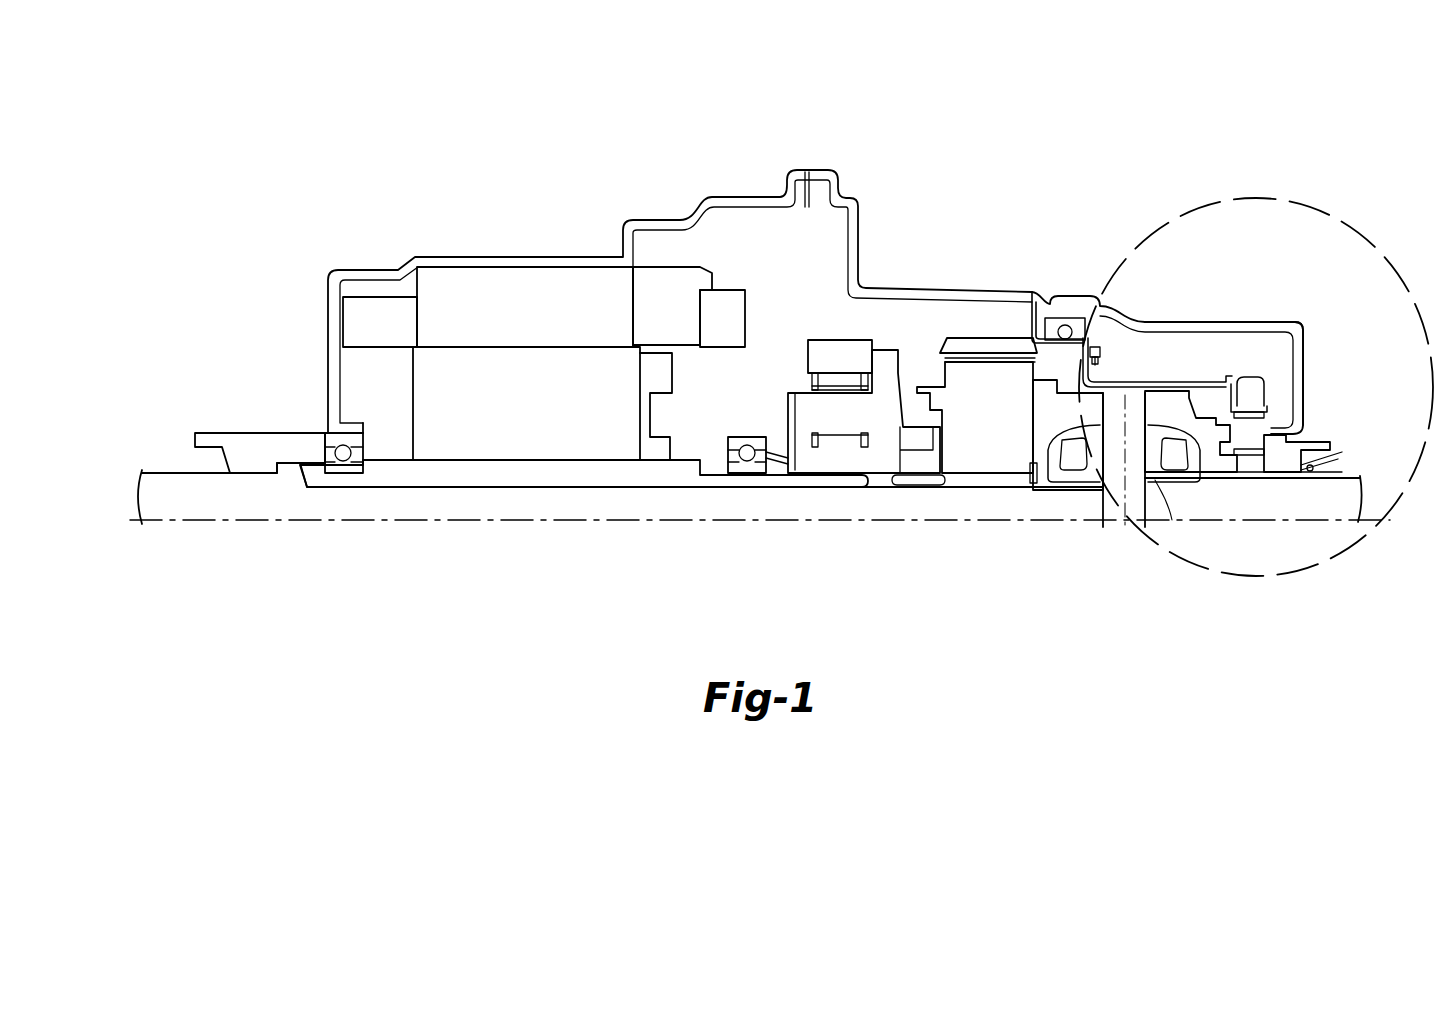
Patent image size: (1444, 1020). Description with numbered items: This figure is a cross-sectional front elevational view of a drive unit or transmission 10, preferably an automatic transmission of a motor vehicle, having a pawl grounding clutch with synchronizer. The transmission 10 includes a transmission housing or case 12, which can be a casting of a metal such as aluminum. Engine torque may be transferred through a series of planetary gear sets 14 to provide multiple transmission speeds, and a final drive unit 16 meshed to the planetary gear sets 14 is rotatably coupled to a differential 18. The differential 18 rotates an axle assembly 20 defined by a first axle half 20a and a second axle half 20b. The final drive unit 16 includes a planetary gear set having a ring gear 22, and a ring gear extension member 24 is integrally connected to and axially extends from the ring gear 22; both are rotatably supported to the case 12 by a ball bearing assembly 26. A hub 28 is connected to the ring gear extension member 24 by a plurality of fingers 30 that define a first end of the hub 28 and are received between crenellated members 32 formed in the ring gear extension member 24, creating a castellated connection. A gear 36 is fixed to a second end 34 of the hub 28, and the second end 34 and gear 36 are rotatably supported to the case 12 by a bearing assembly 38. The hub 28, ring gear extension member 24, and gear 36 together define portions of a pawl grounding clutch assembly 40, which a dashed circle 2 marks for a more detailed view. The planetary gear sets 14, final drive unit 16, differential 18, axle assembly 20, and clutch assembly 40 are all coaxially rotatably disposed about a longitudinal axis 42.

The detail view reference (FIG. 2) 2 is at (1268, 200).
The transmission 10 is at (1093, 117).
The transmission case 12 is at (898, 288).
The planetary gear sets 14 is at (858, 326).
The final drive unit 16 is at (958, 333).
The differential 18 is at (1138, 515).
The axle assembly 20 is at (1000, 524).
The first axle half 20a is at (937, 503).
The second axle half 20b is at (1273, 510).
The ring gear 22 is at (1001, 350).
The ring gear extension member 24 is at (1053, 354).
The ball bearing assembly 26 is at (1062, 345).
The hub 28 is at (1186, 389).
The fingers 30 is at (1093, 346).
The crenellated members 32 is at (1102, 355).
The second end of the hub 34 is at (1221, 389).
The gear 36 is at (1257, 384).
The bearing assembly 38 is at (1268, 423).
The pawl grounding clutch assembly 40 is at (1305, 315).
The longitudinal axis 42 is at (384, 527).